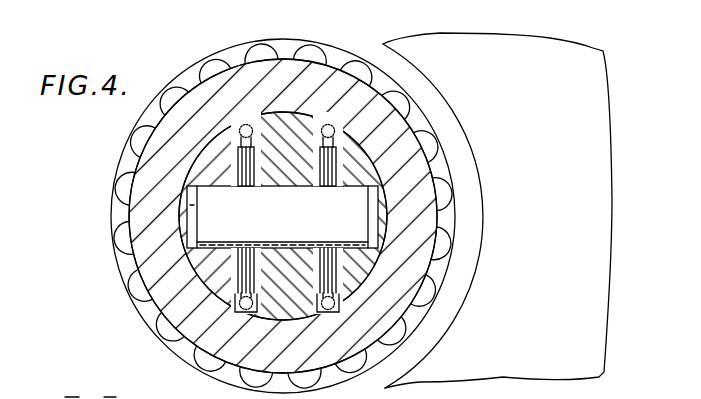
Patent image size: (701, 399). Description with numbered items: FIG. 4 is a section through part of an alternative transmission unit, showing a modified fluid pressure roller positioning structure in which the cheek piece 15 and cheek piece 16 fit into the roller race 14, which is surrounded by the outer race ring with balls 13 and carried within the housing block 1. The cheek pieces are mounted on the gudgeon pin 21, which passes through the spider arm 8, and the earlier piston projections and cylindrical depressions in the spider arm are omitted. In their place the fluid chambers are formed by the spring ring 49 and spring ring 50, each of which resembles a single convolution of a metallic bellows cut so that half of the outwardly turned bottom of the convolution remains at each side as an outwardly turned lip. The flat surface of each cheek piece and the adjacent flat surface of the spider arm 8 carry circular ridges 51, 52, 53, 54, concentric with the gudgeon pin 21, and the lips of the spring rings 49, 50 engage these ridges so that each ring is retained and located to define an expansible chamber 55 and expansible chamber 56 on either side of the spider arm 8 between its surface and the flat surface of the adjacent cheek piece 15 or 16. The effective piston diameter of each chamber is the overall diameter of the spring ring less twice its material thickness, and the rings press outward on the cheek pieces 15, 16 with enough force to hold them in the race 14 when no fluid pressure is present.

The housing block 1 is at (526, 225).
The spider arm 8 is at (220, 171).
The outer race ring with balls 13 is at (396, 333).
The roller race 14 is at (384, 44).
The cheek piece 15 is at (212, 280).
The cheek piece 16 is at (352, 268).
The gudgeon pin 21 is at (284, 229).
The spring ring 49 is at (246, 124).
The spring ring 50 is at (334, 128).
The circular ridge 51 is at (238, 146).
The circular ridge 52 is at (223, 218).
The circular ridge 53 is at (320, 218).
The circular ridge 54 is at (336, 146).
The expansible chamber 55 is at (238, 166).
The expansible chamber 56 is at (342, 166).